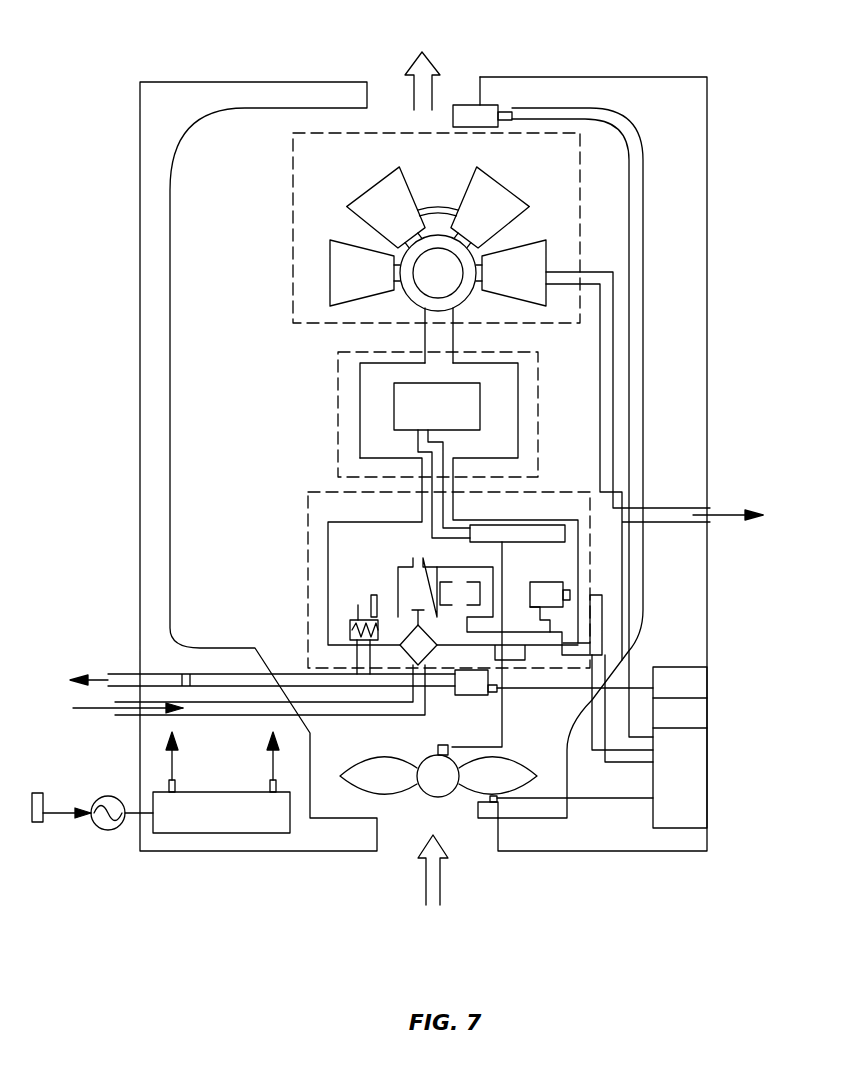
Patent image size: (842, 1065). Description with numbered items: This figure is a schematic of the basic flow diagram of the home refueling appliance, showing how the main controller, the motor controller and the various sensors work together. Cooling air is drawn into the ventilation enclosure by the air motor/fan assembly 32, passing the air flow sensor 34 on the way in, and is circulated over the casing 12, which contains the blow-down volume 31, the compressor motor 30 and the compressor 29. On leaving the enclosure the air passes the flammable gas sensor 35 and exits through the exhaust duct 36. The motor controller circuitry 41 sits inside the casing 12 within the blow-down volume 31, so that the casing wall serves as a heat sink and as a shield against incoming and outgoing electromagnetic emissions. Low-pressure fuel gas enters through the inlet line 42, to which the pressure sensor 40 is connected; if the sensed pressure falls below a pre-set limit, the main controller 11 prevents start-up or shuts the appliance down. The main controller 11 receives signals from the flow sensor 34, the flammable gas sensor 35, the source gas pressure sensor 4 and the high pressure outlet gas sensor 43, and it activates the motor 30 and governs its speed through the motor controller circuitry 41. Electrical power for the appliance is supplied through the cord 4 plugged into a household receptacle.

The electrical cord 4 is at (57, 817).
The main controller 11 is at (692, 753).
The casing 12 is at (580, 553).
The compressor 29 is at (293, 206).
The compressor motor 30 is at (340, 420).
The blow-down volume 31 is at (347, 553).
The air motor/fan assembly 32 is at (380, 778).
The air flow sensor 34 is at (488, 818).
The flammable gas sensor 35 is at (488, 115).
The exhaust duct 36 is at (457, 87).
The pressure sensor 40 is at (475, 678).
The motor controller circuitry 41 is at (537, 527).
The low-pressure fuel gas inlet line 42 is at (90, 703).
The high pressure outlet gas sensor 43 is at (552, 590).